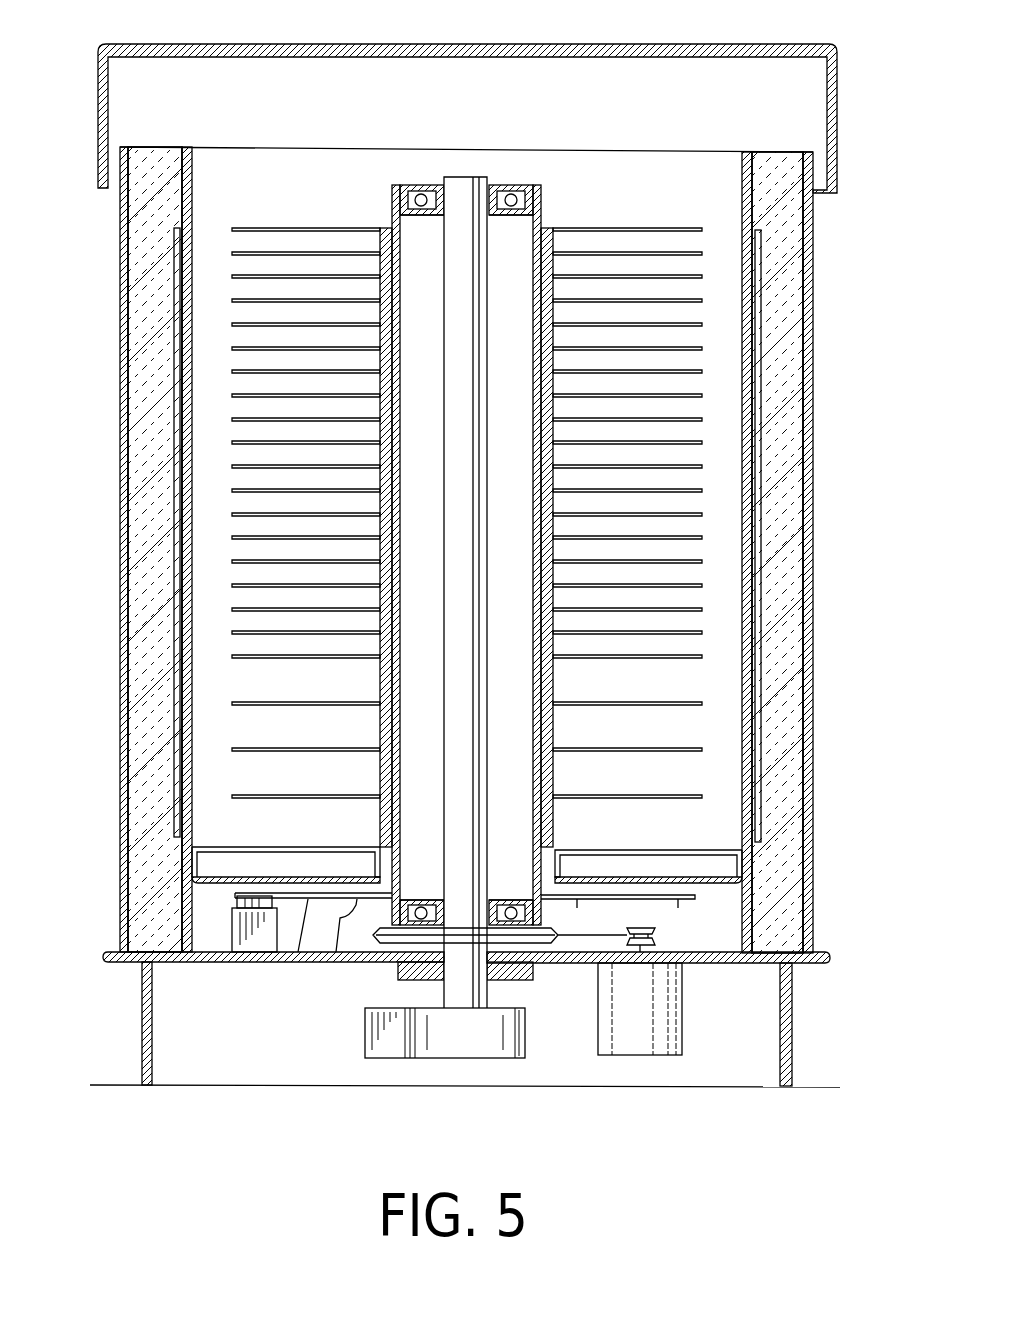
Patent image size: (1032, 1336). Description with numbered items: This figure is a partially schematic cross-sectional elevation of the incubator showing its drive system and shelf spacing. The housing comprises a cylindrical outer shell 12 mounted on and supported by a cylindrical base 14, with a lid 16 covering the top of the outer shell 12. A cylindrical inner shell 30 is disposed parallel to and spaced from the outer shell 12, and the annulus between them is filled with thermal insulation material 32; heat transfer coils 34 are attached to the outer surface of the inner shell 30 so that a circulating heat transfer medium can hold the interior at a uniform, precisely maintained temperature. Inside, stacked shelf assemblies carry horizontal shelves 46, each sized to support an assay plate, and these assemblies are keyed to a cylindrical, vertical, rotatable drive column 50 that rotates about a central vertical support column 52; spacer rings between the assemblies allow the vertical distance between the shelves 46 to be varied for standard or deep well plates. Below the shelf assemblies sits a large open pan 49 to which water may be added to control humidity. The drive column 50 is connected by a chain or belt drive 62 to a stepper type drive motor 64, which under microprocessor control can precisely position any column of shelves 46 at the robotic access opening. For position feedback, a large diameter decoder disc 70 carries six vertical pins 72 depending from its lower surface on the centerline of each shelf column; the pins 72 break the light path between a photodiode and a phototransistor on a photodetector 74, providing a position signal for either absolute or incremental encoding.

The outer shell 12 is at (813, 253).
The base 14 is at (145, 1020).
The lid 16 is at (710, 50).
The inner shell 30 is at (185, 520).
The thermal insulation material 32 is at (788, 732).
The heat transfer coils 34 is at (175, 600).
The shelves 46 is at (305, 226).
The pan 49 is at (688, 878).
The drive column 50 is at (545, 203).
The support column 52 is at (462, 185).
The chain or belt drive 62 is at (585, 943).
The drive motor 64 is at (637, 1043).
The decoder disc 70 is at (310, 902).
The pins 72 is at (350, 906).
The photodetector 74 is at (255, 945).